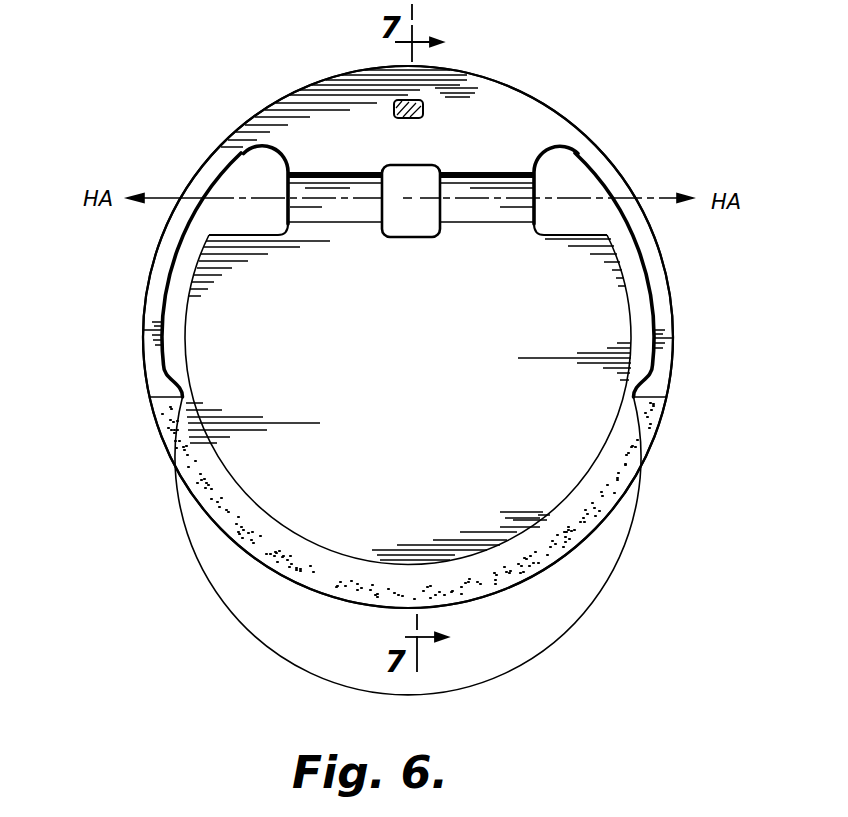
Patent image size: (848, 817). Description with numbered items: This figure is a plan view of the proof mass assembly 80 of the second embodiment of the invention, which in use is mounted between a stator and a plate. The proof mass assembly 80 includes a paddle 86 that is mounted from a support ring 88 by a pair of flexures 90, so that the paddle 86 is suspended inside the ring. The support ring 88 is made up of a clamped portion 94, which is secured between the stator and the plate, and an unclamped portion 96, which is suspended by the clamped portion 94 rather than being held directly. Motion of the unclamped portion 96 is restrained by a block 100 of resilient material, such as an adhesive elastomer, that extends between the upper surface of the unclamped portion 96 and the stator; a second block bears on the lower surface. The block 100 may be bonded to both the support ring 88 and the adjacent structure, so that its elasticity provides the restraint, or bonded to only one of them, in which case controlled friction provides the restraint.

The proof mass assembly 80 is at (134, 270).
The paddle 86 is at (413, 391).
The support ring 88 is at (134, 352).
The flexures 90 is at (315, 187).
The clamped portion 94 is at (583, 519).
The unclamped portion 96 is at (670, 276).
The block 100 is at (424, 102).